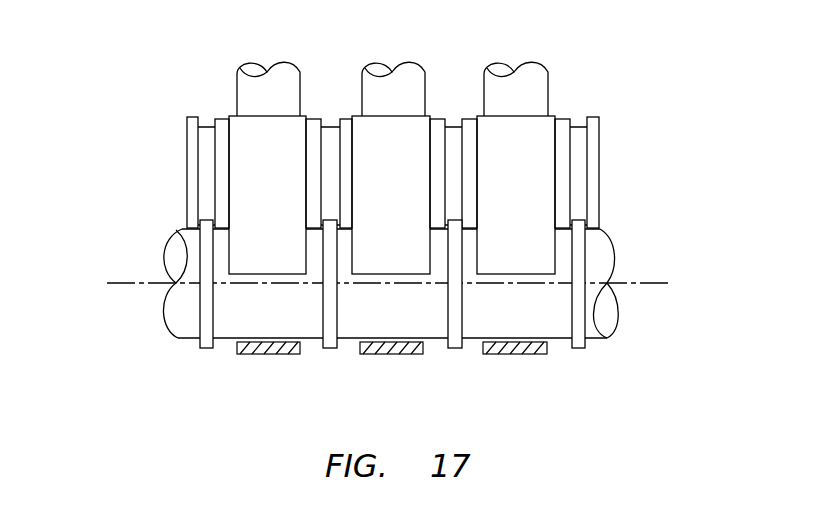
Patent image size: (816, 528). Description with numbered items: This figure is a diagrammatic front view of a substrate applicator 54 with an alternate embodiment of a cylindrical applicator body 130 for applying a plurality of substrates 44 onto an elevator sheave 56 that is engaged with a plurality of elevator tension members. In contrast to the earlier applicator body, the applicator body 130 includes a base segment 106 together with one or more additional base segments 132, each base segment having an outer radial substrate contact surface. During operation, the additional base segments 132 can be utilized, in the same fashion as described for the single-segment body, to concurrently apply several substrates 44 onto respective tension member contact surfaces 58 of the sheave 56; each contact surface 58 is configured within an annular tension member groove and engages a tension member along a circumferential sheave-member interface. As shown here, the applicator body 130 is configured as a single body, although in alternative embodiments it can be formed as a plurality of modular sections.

The substrate 44 is at (280, 255).
The substrate applicator 54 is at (610, 100).
The sheave 56 is at (613, 241).
The tension member contact surface 58 is at (222, 330).
The base segment 106 is at (561, 119).
The cylindrical applicator body 130 is at (186, 132).
The additional base segments 132 is at (312, 117).